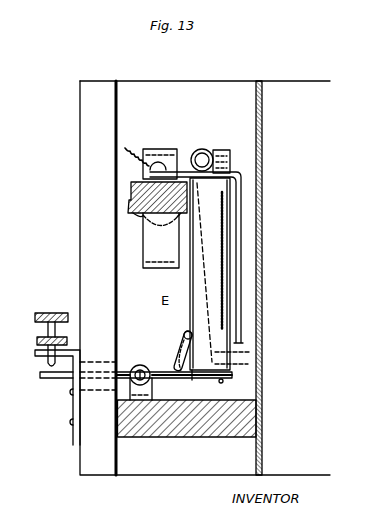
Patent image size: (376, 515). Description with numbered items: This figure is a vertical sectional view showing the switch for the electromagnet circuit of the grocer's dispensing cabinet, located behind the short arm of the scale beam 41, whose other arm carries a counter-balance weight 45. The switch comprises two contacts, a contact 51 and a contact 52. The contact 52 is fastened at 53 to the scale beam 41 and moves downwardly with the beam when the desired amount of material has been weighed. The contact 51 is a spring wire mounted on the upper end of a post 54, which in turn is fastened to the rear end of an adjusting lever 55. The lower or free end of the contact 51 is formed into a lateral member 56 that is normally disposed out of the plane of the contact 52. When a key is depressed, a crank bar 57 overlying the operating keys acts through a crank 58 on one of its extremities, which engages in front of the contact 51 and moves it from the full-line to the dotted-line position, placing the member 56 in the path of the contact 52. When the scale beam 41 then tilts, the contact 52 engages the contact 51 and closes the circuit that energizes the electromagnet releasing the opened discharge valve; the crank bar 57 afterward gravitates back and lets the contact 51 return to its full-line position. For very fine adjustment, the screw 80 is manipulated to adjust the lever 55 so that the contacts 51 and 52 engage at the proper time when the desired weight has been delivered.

The beam 41 is at (130, 198).
The counter-balance weight 45 is at (146, 216).
The contact 51 is at (193, 278).
The contact 52 is at (243, 247).
The fastening 53 is at (156, 166).
The post 54 is at (231, 160).
The adjusting lever 55 is at (163, 372).
The lateral member 56 is at (231, 366).
The crank bar 57 is at (183, 345).
The crank 58 is at (195, 373).
The screw 80 is at (40, 331).